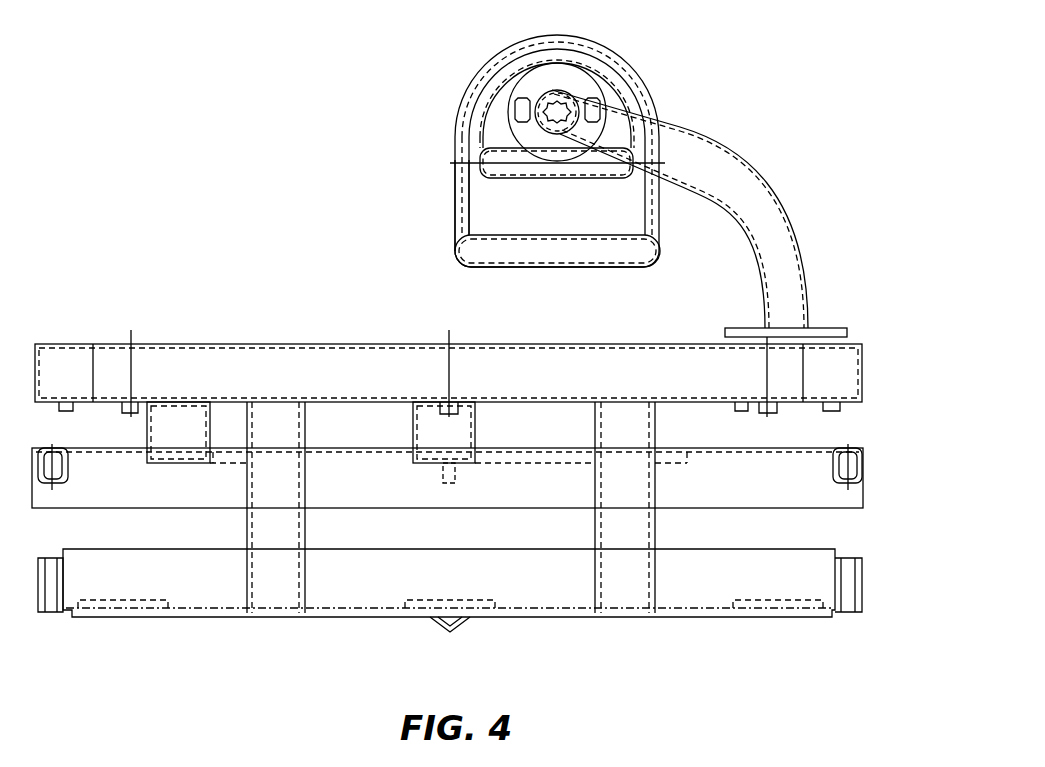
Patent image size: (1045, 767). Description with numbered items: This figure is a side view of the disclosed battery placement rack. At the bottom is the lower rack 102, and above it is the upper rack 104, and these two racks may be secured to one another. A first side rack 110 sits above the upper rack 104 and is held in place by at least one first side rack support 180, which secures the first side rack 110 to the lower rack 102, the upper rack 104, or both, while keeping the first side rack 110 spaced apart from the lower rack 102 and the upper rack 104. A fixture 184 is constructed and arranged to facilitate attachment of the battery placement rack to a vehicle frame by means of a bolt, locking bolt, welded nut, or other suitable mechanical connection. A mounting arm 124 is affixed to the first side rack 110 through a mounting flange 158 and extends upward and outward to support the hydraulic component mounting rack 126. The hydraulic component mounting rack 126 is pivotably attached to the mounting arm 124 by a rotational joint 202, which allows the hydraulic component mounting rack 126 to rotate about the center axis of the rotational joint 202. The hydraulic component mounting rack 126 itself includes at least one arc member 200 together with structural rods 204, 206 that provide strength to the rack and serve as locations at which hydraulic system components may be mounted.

The lower rack 102 is at (832, 612).
The upper rack 104 is at (863, 478).
The first side rack 110 is at (862, 380).
The mounting arm 124 is at (776, 205).
The hydraulic component mounting rack 126 is at (455, 200).
The mounting flange 158 is at (850, 333).
The first side rack support 180 is at (655, 432).
The fixture 184 is at (147, 432).
The arc member 200 is at (497, 65).
The rotational joint 202 is at (552, 90).
The structural rod 204 is at (586, 178).
The structural rod 206 is at (582, 268).